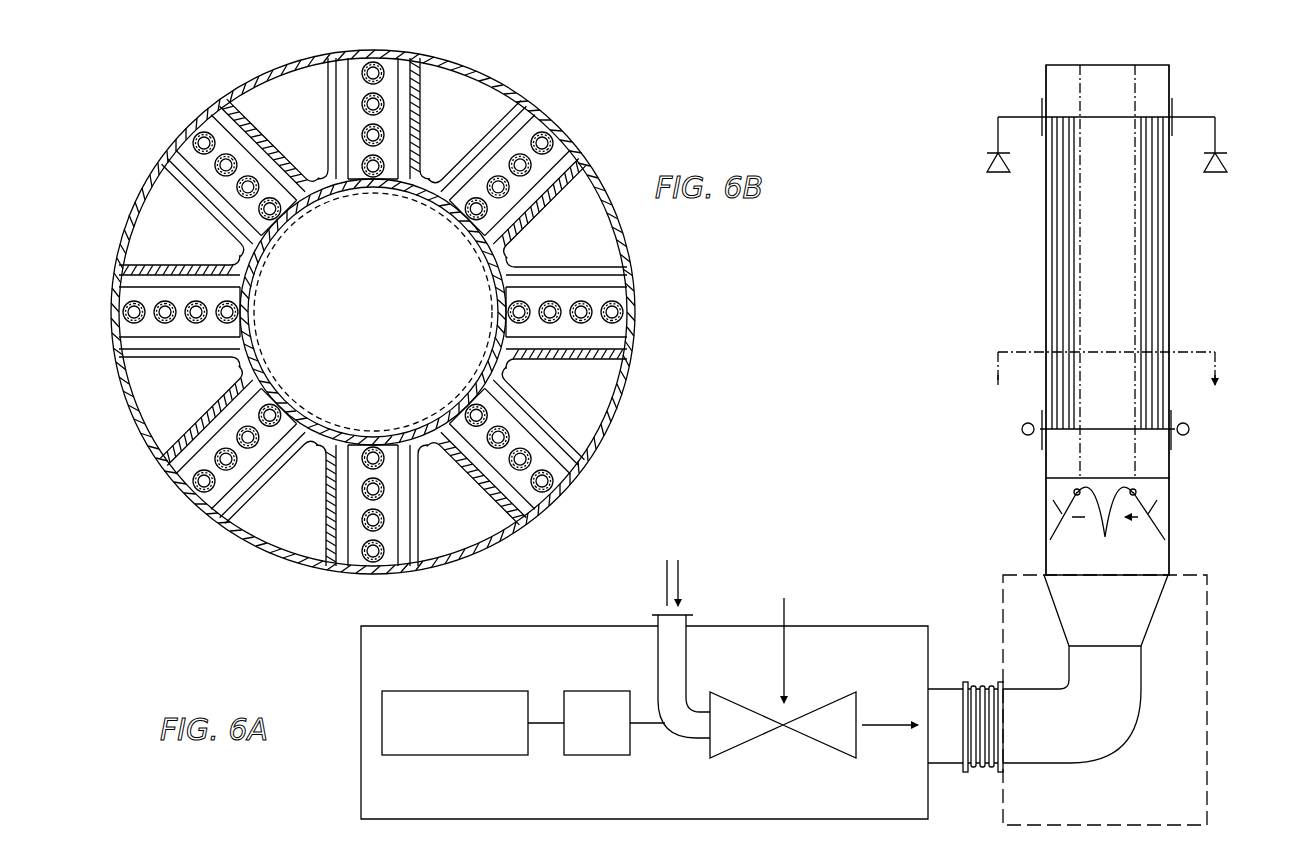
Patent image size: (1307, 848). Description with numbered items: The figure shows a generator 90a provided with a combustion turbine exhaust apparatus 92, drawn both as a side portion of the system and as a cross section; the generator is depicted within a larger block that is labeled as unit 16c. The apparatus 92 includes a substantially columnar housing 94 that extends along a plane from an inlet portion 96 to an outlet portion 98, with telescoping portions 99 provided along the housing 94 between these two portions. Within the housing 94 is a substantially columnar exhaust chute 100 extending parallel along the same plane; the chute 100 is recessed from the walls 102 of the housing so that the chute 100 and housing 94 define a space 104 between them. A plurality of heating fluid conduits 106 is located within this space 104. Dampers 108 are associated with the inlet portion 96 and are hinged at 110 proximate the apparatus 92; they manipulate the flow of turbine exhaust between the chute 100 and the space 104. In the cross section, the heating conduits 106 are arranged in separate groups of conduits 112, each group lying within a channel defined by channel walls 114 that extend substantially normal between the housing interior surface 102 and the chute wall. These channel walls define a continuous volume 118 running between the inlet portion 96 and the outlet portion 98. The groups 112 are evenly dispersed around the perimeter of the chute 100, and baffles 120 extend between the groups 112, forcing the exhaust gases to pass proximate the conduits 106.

In FIG. 6A, the combustion turbine exhaust apparatus 92 is at (978, 112).
In FIG. 6A, the housing 94 is at (1252, 65).
In FIG. 6A, the inlet portion 96 is at (1003, 478).
In FIG. 6A, the outlet portion 98 is at (1169, 57).
In FIG. 6A, the telescoping portions 99 is at (1176, 117).
In FIG. 6B, the exhaust chute 100 is at (295, 227).
In FIG. 6A, the exhaust chute 100 is at (1110, 92).
In FIG. 6B, the walls of the housing 102 is at (150, 215).
In FIG. 6A, the walls of the housing 102 is at (1165, 228).
In FIG. 6B, the space 104 is at (150, 293).
In FIG. 6A, the space 104 is at (1062, 104).
In FIG. 6B, the heating fluid conduits 106 is at (473, 203).
In FIG. 6A, the heating fluid conduits 106 is at (1072, 320).
In FIG. 6A, the dampers 108 is at (1062, 522).
In FIG. 6A, the hinge 110 is at (1105, 527).
In FIG. 6B, the groups of conduits 112 is at (417, 317).
In FIG. 6B, the channel walls 114 is at (330, 108).
In FIG. 6B, the continuous volume 118 is at (530, 345).
In FIG. 6B, the baffles 120 is at (170, 393).
In FIG. 6A, the gas turbine engine 16c is at (644, 635).
In FIG. 6A, the generator 90a is at (455, 690).